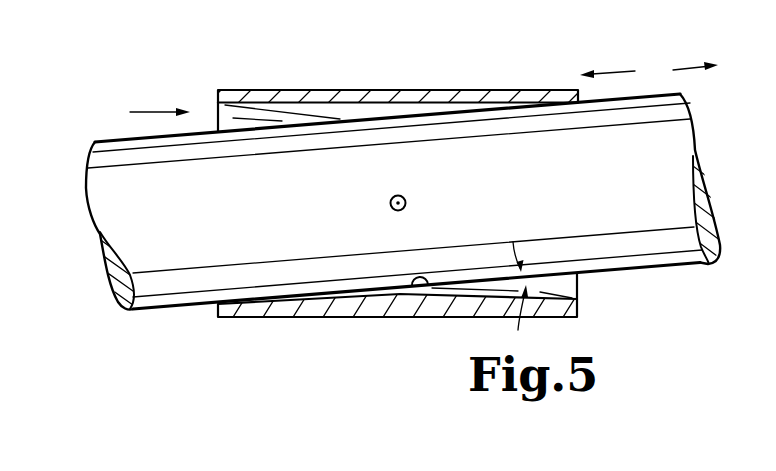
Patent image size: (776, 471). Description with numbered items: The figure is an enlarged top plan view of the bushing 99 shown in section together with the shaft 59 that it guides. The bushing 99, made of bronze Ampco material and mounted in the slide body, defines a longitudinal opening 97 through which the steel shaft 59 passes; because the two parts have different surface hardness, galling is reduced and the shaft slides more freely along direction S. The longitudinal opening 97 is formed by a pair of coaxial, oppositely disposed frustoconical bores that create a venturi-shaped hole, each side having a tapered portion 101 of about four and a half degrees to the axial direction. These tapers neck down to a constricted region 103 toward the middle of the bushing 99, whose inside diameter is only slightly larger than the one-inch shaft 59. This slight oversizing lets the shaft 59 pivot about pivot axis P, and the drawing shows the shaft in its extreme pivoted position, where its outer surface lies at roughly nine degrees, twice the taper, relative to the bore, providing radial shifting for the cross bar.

The shaft 59 is at (257, 219).
The longitudinal opening 97 is at (147, 114).
The bushing 99 is at (471, 90).
The tapered portion 101 is at (556, 297).
The constricted region 103 is at (424, 300).
The pivot axis P is at (405, 207).
The direction S is at (649, 73).